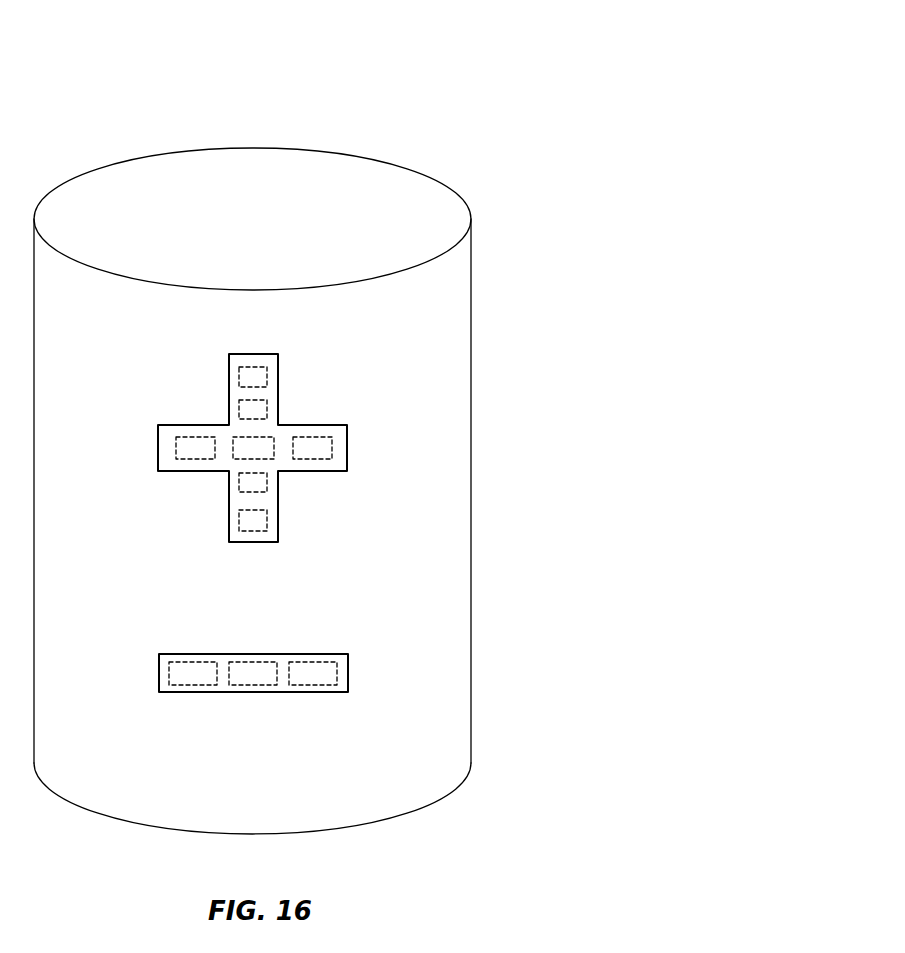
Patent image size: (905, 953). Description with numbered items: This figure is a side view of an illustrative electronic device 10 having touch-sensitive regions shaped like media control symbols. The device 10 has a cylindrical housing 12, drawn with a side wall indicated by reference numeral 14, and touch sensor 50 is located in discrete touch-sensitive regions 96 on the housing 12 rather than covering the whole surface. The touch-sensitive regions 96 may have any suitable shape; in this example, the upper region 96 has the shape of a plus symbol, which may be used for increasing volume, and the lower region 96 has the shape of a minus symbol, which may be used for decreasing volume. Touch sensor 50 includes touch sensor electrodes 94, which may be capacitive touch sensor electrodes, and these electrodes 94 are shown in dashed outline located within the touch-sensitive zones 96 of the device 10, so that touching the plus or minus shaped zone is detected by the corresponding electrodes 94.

The electronic device 10 is at (434, 88).
The housing 12 is at (471, 310).
The fabric cover 14 is at (448, 498).
The touch sensor 50 is at (270, 549).
The touch sensor electrodes 94 is at (239, 483).
The touch-sensitive regions 96 is at (313, 472).